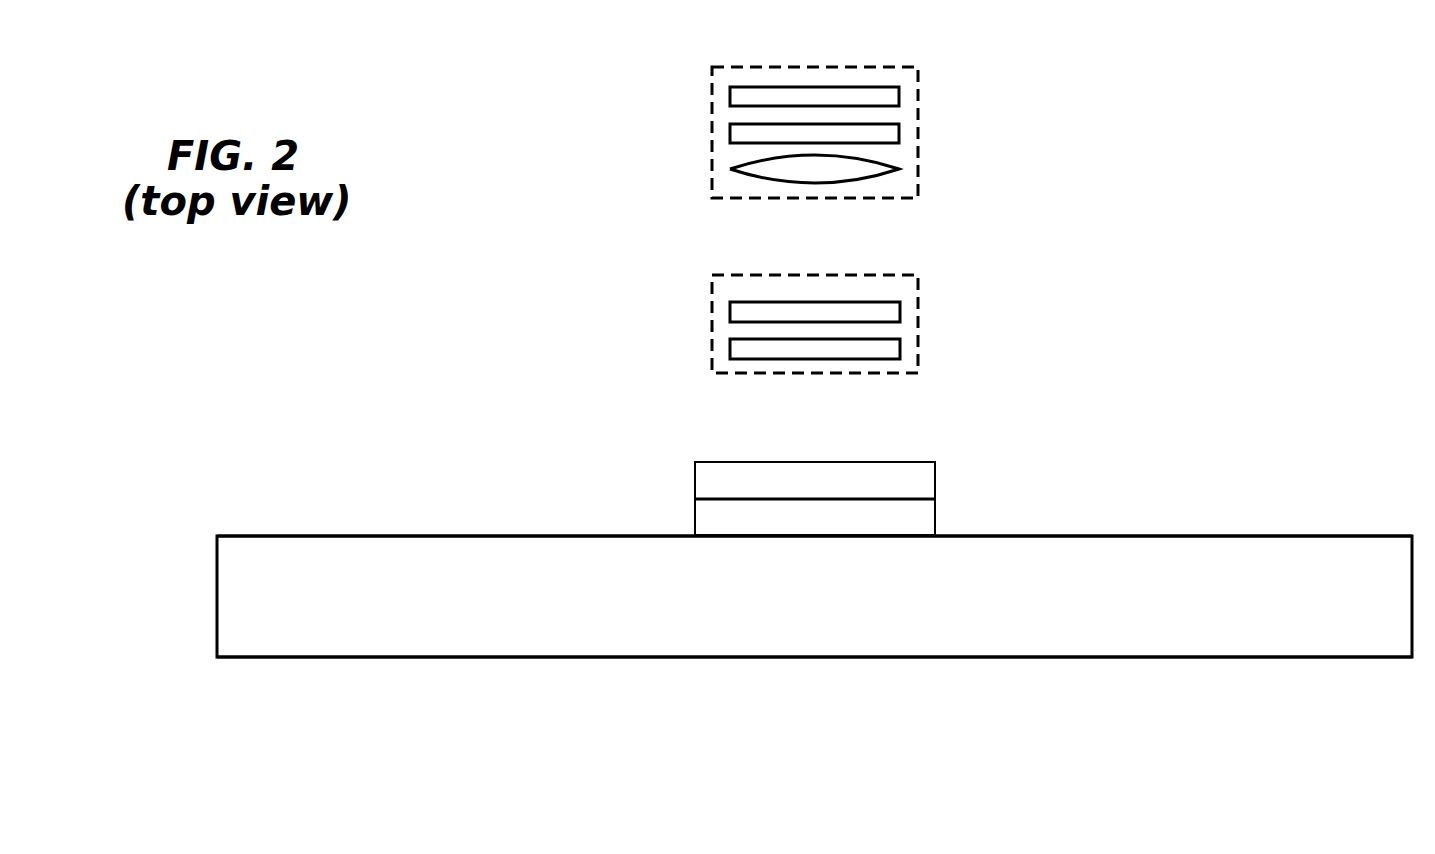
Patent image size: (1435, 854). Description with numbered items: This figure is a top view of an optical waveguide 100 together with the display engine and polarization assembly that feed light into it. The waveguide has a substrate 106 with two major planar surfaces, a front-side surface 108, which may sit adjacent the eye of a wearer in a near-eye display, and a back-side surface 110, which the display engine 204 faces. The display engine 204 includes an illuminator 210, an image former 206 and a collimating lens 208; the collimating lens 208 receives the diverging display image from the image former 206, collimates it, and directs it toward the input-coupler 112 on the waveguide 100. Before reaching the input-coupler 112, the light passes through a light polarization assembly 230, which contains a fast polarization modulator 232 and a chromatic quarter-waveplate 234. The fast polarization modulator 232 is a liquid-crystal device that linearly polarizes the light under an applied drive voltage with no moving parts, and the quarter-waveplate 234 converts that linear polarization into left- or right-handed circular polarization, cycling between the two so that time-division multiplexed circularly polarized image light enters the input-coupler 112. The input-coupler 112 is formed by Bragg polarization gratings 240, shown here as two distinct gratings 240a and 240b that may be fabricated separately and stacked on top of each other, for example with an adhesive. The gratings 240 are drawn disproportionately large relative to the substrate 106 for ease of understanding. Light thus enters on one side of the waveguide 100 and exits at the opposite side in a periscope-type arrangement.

The optical waveguide 100 is at (1263, 361).
The substrate 106 is at (814, 596).
The front-side surface 108 is at (1292, 660).
The back-side surface 110 is at (1297, 533).
The input-coupler 112 is at (630, 473).
The display engine 204 is at (712, 78).
The image former 206 is at (730, 130).
The collimating lens 208 is at (730, 168).
The illuminator 210 is at (730, 96).
The light polarization assembly 230 is at (918, 285).
The fast polarization modulator 232 is at (900, 314).
The chromatic quarter-waveplate 234 is at (900, 350).
The Bragg polarization gratings 240 is at (909, 493).
The first Bragg polarization grating 240a is at (935, 480).
The second Bragg polarization grating 240b is at (935, 515).